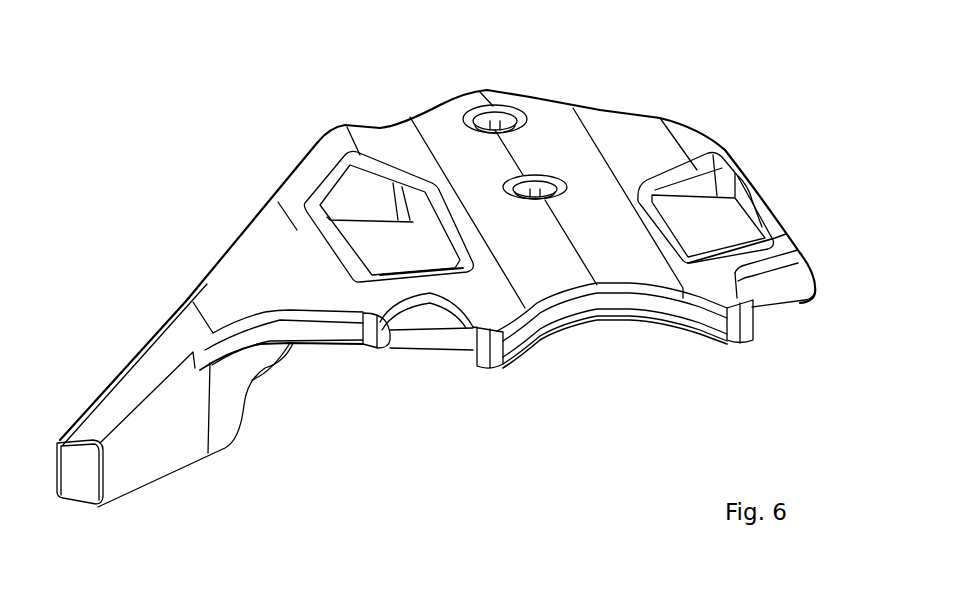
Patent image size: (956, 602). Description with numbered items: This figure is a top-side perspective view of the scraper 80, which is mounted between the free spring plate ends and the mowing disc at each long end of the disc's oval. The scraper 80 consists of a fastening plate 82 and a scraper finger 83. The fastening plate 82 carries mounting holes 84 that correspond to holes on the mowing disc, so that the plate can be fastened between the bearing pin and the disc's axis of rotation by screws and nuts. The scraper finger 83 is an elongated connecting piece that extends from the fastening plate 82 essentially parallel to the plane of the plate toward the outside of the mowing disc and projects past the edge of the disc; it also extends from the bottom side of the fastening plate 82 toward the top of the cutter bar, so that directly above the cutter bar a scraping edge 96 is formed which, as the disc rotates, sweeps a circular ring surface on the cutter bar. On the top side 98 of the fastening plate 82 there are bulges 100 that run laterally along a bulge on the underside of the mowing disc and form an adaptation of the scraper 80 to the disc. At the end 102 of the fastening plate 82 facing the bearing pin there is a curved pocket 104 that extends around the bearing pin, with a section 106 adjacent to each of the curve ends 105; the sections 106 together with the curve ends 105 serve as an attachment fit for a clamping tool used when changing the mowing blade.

The scraper 80 is at (771, 177).
The fastening plate 82 is at (600, 257).
The scraper finger 83 is at (163, 425).
The mounting holes 84 is at (537, 197).
The scraping edge 96 is at (137, 493).
The top side 98 is at (470, 163).
The bulges 100 is at (703, 150).
The end 102 is at (604, 330).
The curved pocket 104 is at (587, 313).
The curve ends 105 is at (500, 363).
The sections 106 is at (420, 318).